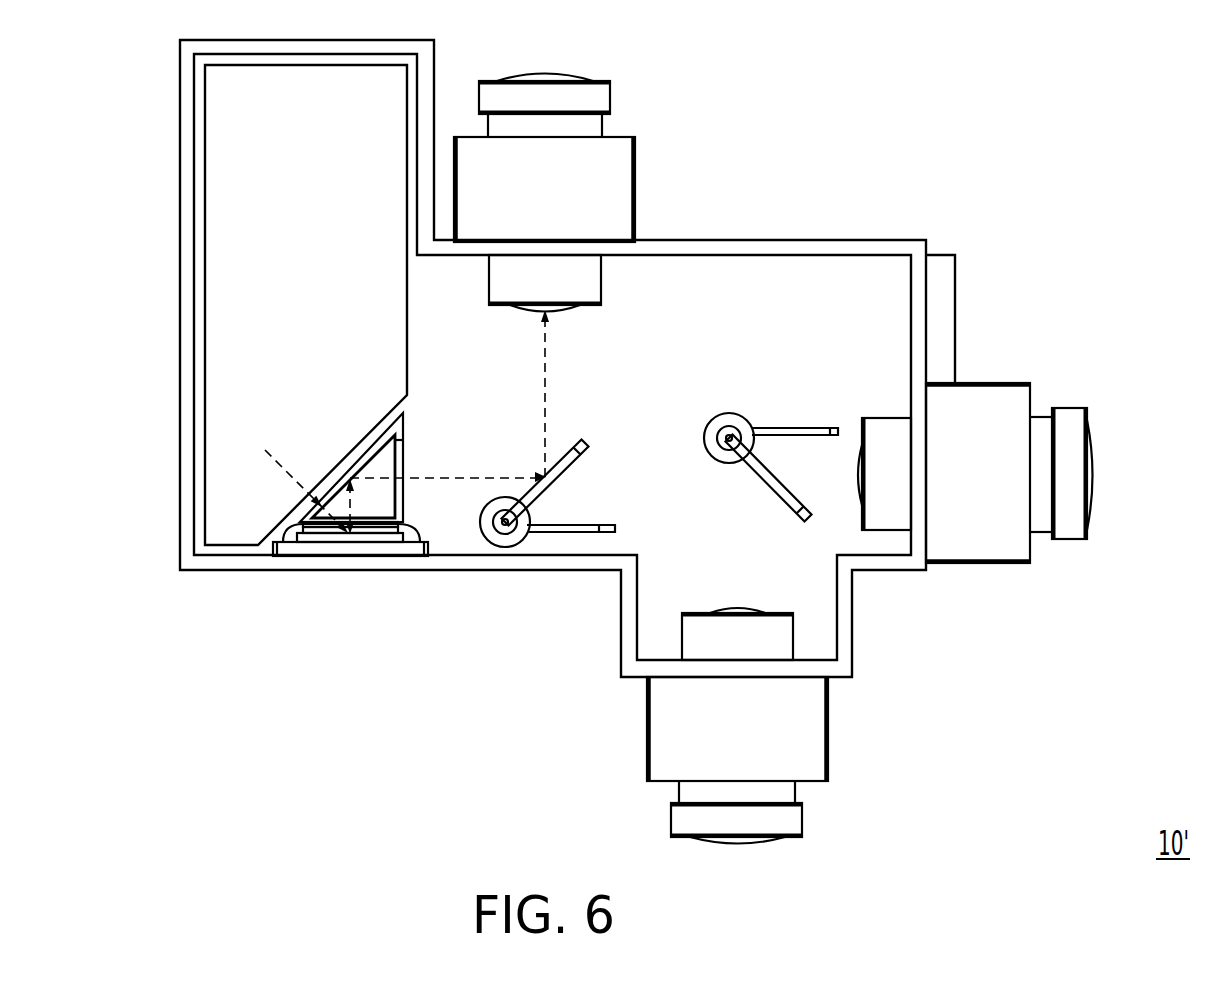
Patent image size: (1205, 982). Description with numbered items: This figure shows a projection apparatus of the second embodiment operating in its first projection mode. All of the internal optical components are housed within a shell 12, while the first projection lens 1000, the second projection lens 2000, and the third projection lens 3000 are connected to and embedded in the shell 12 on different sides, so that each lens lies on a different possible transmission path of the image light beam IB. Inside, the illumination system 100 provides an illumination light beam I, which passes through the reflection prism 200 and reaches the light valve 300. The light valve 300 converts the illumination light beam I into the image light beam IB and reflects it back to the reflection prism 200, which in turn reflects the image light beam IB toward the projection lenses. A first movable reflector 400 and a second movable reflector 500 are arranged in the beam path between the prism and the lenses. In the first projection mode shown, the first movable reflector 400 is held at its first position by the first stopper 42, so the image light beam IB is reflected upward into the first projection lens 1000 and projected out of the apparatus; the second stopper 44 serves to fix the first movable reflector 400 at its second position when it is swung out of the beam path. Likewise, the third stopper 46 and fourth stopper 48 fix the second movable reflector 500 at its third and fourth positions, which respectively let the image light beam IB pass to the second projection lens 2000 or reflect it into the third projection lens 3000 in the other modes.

The shell 12 is at (840, 671).
The illumination system 100 is at (213, 78).
The reflection prism 200 is at (380, 502).
The light valve 300 is at (311, 540).
The first movable reflector 400 is at (543, 487).
The second movable reflector 500 is at (810, 517).
The first stopper 42 is at (577, 440).
The second stopper 44 is at (606, 532).
The third stopper 46 is at (833, 428).
The fourth stopper 48 is at (790, 519).
The first projection lens 1000 is at (602, 100).
The second projection lens 2000 is at (1067, 522).
The third projection lens 3000 is at (793, 822).
The illumination light beam I is at (298, 478).
The image light beam IB is at (366, 533).